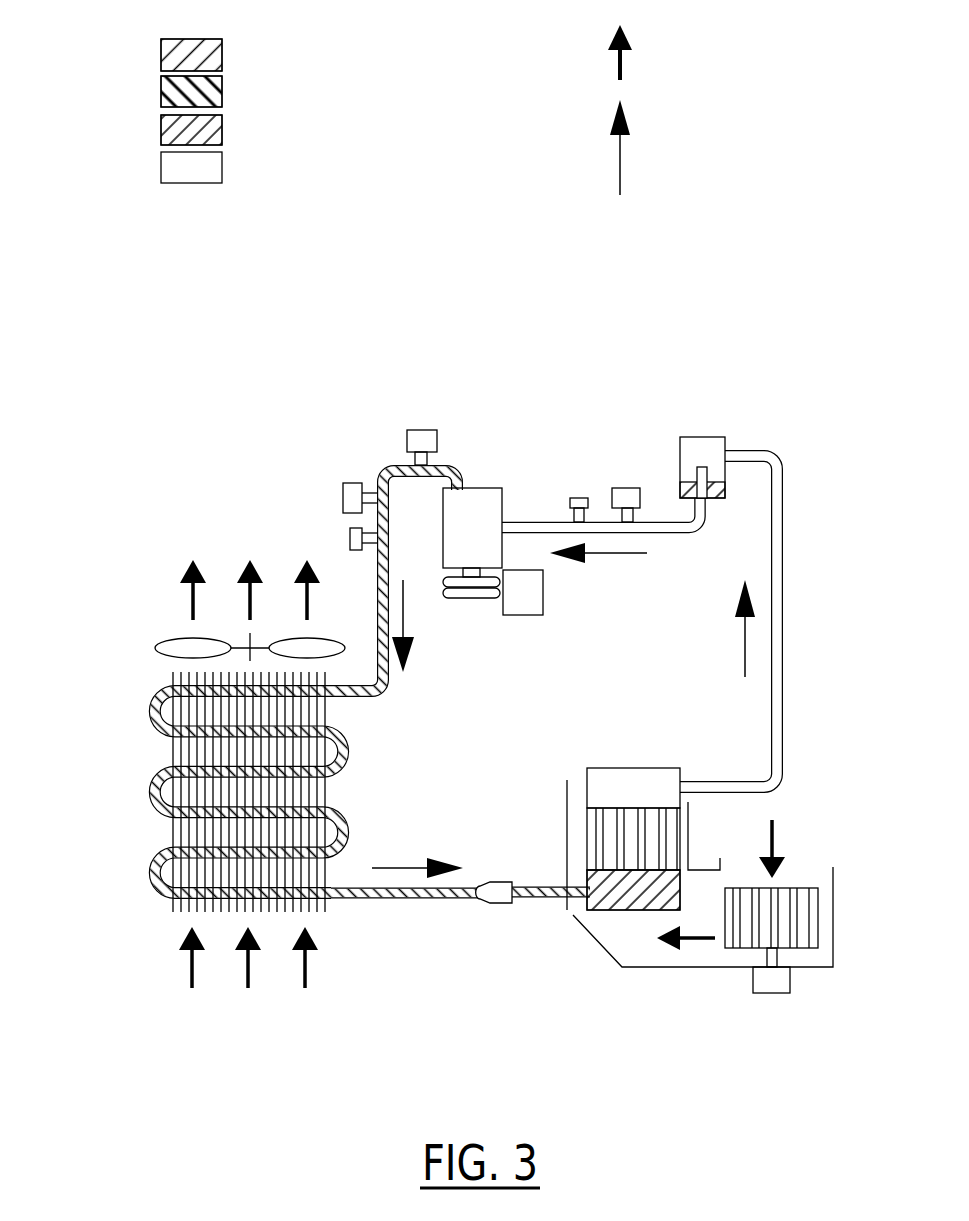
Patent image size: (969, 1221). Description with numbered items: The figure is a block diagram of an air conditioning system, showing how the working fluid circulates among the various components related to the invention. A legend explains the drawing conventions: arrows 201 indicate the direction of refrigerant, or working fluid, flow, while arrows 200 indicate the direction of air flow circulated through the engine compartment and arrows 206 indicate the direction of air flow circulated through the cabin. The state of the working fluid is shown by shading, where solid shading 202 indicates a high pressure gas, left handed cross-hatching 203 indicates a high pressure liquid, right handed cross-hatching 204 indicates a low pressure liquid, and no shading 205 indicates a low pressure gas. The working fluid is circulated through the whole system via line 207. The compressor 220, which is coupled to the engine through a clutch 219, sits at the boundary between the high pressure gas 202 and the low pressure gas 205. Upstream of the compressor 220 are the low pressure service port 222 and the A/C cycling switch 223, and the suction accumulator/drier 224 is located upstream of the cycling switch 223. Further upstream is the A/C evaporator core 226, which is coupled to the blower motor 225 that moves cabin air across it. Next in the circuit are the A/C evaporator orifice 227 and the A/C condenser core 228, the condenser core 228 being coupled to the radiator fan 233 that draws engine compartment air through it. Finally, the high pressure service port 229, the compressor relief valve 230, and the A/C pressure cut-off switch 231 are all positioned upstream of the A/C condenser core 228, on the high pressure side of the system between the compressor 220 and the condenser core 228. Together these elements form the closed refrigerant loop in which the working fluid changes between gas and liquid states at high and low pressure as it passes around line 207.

The arrows indicating engine compartment air flow 200 is at (190, 972).
The arrows indicating refrigerant flow 201 is at (618, 175).
The high pressure gas shading 202 is at (192, 40).
The high pressure liquid cross-hatching 203 is at (161, 90).
The low pressure liquid cross-hatching 204 is at (161, 130).
The low pressure gas (no shading) 205 is at (161, 170).
The arrows indicating cabin air flow 206 is at (618, 61).
The line 207 is at (527, 522).
The clutch 219 is at (527, 615).
The compressor 220 is at (502, 488).
The low pressure service port 222 is at (584, 498).
The A/C cycling switch 223 is at (627, 488).
The suction accumulator/drier 224 is at (725, 437).
The blower motor 225 is at (722, 950).
The A/C evaporator core 226 is at (575, 918).
The A/C evaporator orifice 227 is at (488, 905).
The A/C condenser core 228 is at (347, 812).
The high pressure service port 229 is at (350, 537).
The compressor relief valve 230 is at (343, 490).
The A/C pressure cut-off switch 231 is at (437, 382).
The radiator fan 233 is at (155, 648).